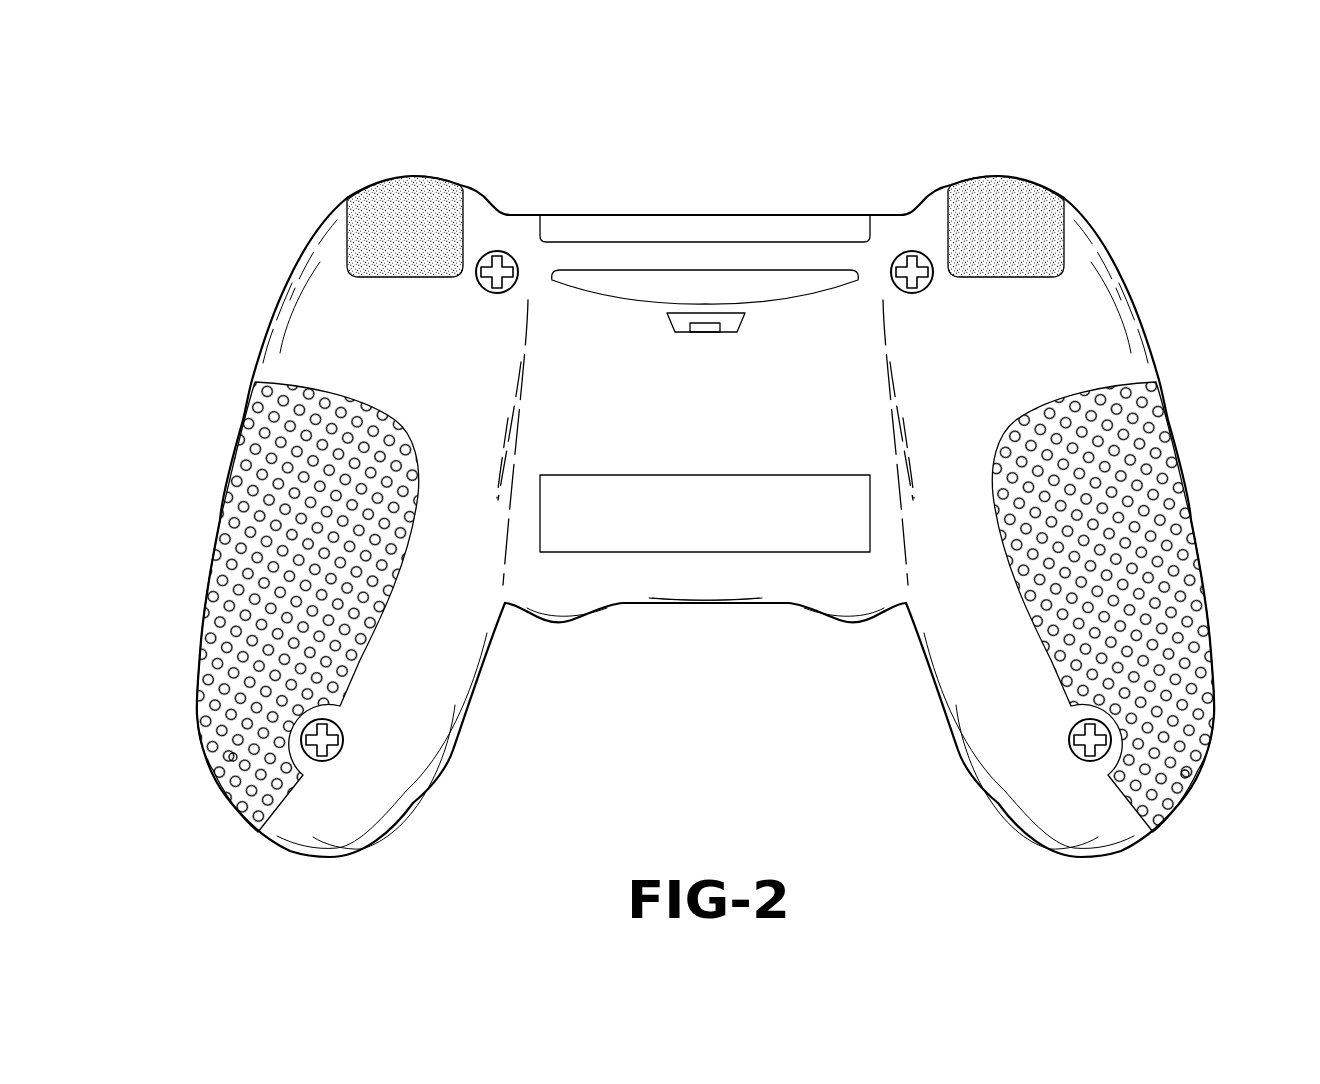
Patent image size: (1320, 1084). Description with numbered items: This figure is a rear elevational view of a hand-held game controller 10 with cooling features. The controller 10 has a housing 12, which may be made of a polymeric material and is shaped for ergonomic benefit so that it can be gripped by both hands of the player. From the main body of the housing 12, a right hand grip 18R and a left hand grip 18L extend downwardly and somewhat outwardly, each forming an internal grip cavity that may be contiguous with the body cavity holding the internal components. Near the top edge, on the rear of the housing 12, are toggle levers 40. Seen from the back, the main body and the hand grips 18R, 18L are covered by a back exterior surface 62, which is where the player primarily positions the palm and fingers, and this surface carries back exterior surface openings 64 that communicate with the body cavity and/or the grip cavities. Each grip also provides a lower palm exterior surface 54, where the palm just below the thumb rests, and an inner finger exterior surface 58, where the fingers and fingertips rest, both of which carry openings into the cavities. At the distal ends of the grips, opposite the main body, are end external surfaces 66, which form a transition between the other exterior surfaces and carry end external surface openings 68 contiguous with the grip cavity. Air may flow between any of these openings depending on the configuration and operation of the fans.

The hand-held game controller 10 is at (180, 182).
The housing 12 is at (1140, 280).
The right hand grip 18R is at (470, 748).
The left hand grip 18L is at (942, 748).
The toggle levers 40 is at (417, 215).
The lower palm exterior surface 54 is at (215, 557).
The inner finger exterior surface 58 is at (478, 687).
The back exterior surface 62 is at (1023, 372).
The back exterior surface openings 64 is at (240, 416).
The end external surfaces 66 is at (327, 857).
The end external surface openings 68 is at (230, 758).